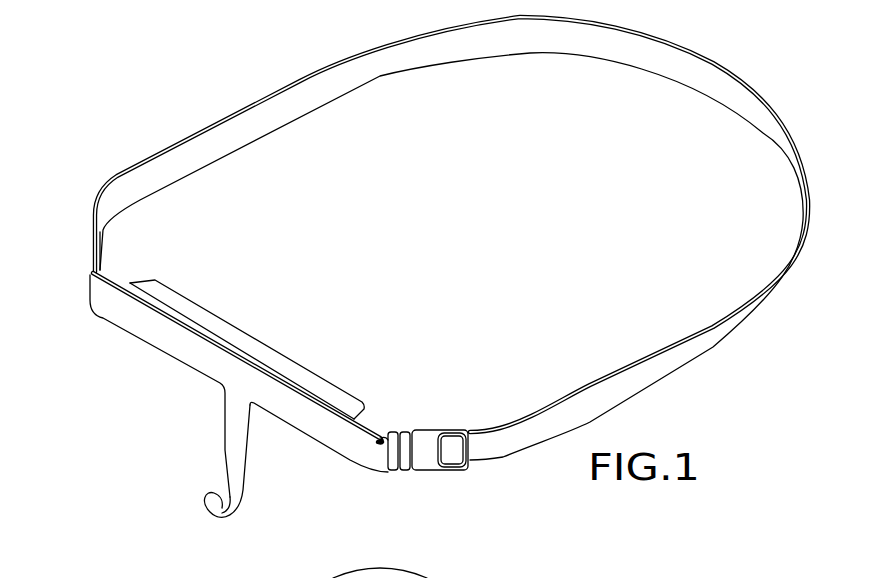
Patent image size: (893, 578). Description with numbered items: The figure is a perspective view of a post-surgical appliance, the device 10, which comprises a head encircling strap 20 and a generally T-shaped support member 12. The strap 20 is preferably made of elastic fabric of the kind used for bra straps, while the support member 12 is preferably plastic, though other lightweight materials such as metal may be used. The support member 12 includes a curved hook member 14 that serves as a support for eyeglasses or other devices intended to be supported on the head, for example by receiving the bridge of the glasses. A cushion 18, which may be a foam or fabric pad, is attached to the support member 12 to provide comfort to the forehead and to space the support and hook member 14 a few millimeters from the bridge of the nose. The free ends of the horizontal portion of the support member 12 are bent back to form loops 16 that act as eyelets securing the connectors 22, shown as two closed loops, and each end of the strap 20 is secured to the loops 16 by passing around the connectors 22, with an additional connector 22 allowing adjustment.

The device 10 is at (172, 88).
The support member 12 is at (243, 378).
The hook member 14 is at (227, 507).
The loops 16 is at (100, 273).
The cushion 18 is at (228, 335).
The strap 20 is at (705, 333).
The connector 22 is at (93, 257).